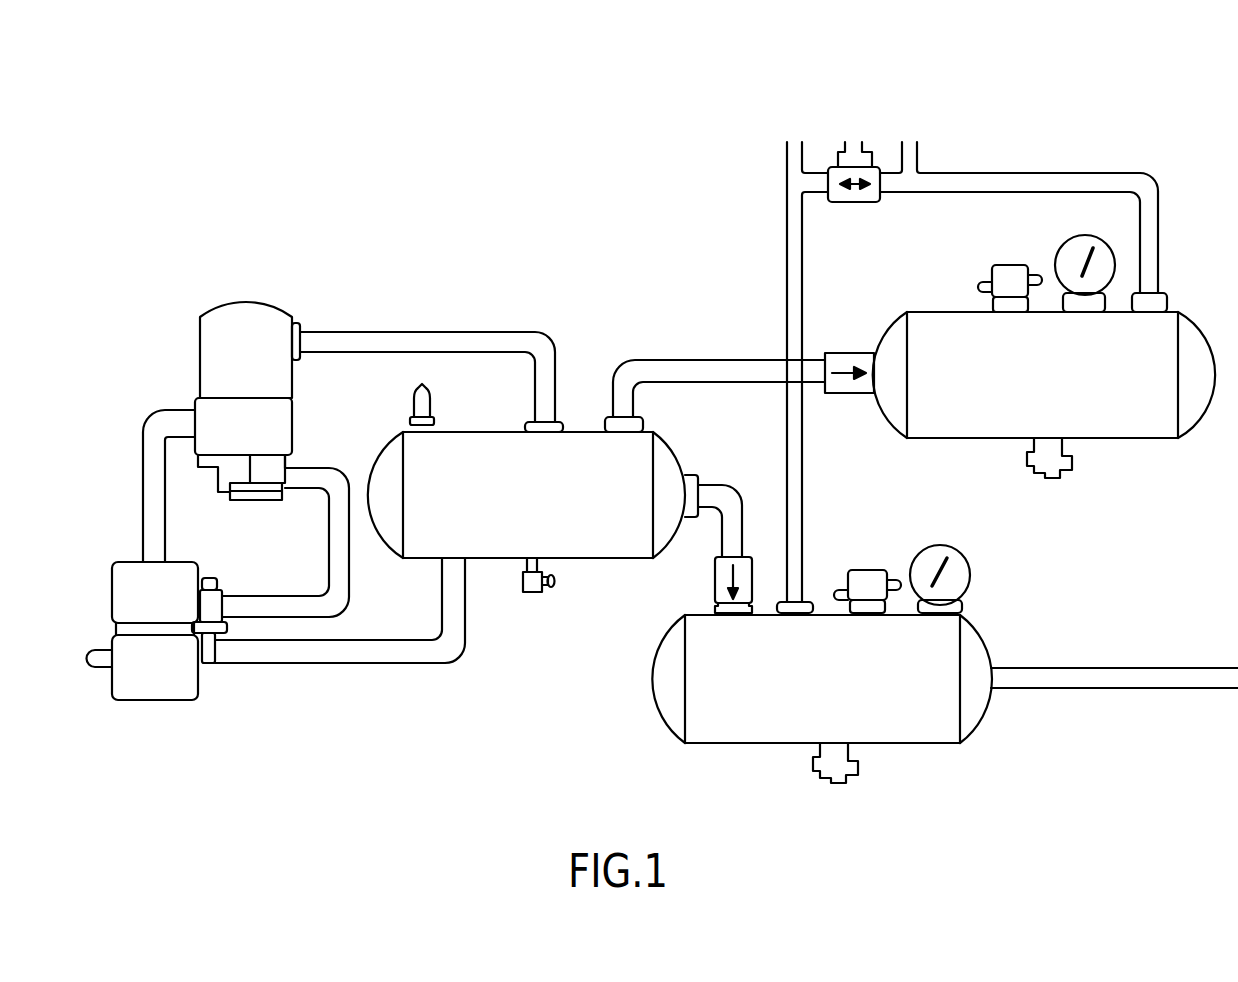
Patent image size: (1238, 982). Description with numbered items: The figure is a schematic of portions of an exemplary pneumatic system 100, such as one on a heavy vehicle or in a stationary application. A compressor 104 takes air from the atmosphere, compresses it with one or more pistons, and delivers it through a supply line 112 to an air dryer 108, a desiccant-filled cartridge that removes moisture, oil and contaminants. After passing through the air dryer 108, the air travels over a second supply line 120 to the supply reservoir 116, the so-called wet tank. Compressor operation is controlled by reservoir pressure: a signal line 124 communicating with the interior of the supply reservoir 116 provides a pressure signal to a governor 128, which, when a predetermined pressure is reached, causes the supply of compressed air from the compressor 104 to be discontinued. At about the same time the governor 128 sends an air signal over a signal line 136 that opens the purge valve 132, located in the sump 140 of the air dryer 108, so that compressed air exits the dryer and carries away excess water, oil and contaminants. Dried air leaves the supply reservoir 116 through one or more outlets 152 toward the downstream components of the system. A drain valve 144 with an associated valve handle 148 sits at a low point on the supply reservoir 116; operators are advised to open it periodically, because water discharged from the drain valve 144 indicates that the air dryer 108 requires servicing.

The pneumatic system 100 is at (648, 110).
The compressor 104 is at (168, 611).
The air dryer 108 is at (260, 376).
The supply line 112 is at (143, 493).
The supply reservoir 116 is at (467, 479).
The supply line 120 is at (402, 332).
The signal line 124 is at (442, 603).
The governor 128 is at (213, 595).
The purge valve 132 is at (283, 462).
The signal line 136 is at (329, 543).
The sump 140 is at (247, 497).
The drain valve 144 is at (527, 592).
The valve handle 148 is at (554, 583).
The outlets 152 is at (760, 384).